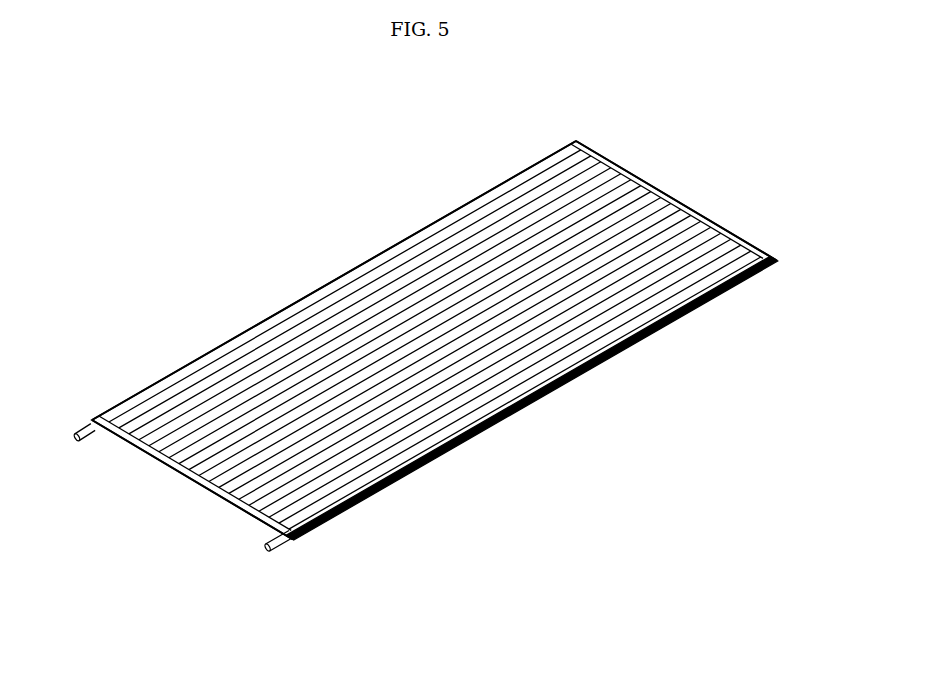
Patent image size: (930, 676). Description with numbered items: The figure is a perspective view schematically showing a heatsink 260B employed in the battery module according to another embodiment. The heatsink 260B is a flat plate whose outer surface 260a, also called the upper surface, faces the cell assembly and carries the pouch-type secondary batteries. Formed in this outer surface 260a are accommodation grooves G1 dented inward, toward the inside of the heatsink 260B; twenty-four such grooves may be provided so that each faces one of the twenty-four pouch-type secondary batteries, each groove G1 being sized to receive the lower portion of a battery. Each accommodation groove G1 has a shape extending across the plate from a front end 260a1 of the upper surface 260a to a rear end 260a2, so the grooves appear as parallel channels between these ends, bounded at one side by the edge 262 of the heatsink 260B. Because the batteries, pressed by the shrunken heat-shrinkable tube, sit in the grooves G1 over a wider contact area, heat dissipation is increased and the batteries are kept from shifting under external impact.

The heatsink 260B is at (265, 300).
The edge portion of heat exchange unit 262 is at (358, 268).
The outer surface 260a is at (562, 168).
The front end 260a1 is at (212, 488).
The rear end 260a2 is at (670, 192).
The accommodation groove G1 is at (753, 263).